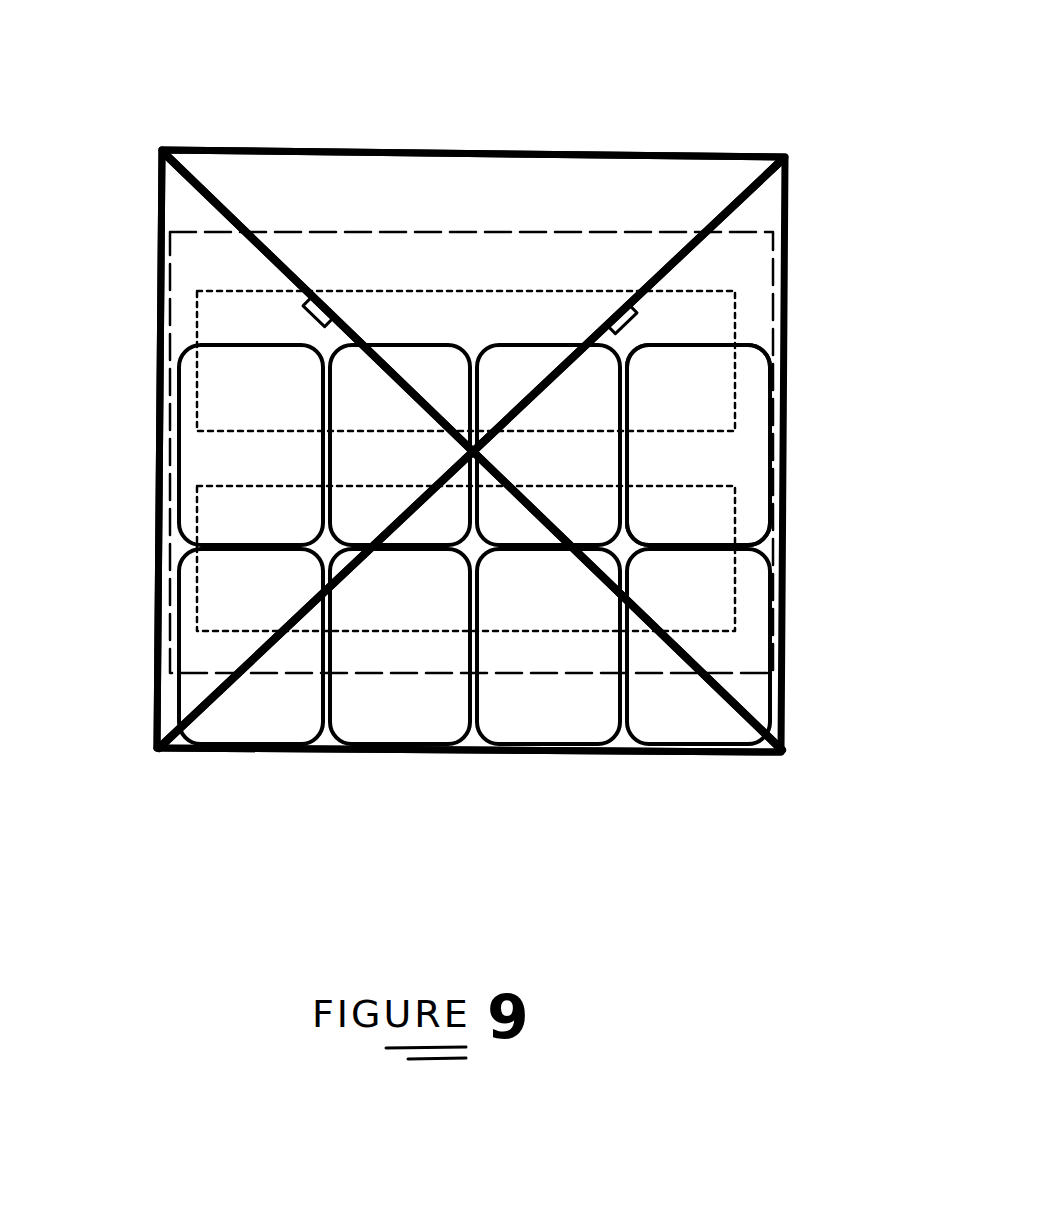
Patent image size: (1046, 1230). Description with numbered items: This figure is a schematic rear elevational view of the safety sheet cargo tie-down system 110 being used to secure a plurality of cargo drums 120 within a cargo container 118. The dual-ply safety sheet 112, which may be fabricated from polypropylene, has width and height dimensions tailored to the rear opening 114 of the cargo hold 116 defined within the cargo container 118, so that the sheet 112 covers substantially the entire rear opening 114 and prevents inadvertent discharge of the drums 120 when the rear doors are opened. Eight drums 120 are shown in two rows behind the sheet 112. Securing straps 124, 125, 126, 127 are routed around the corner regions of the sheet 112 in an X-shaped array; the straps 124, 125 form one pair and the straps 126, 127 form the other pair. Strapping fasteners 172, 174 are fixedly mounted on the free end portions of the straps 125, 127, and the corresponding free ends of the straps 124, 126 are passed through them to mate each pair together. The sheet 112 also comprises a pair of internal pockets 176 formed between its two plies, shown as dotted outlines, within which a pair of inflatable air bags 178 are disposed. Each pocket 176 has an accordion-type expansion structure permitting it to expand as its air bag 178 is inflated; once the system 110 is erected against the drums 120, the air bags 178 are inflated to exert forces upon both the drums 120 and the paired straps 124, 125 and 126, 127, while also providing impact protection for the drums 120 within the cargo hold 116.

The safety sheet cargo tie-down system 110 is at (751, 98).
The dual-ply safety sheet 112 is at (545, 265).
The rear opening 114 is at (430, 186).
The cargo hold 116 is at (618, 750).
The cargo container 118 is at (158, 357).
The cargo drums 120 is at (233, 500).
The securing strap 124 is at (655, 638).
The securing strap 125 is at (232, 218).
The securing strap 126 is at (275, 642).
The securing strap 127 is at (688, 257).
The strapping fastener 172 is at (332, 294).
The strapping fastener 174 is at (622, 306).
The internal pocket 176 is at (735, 327).
The inflatable air bag 178 is at (685, 385).